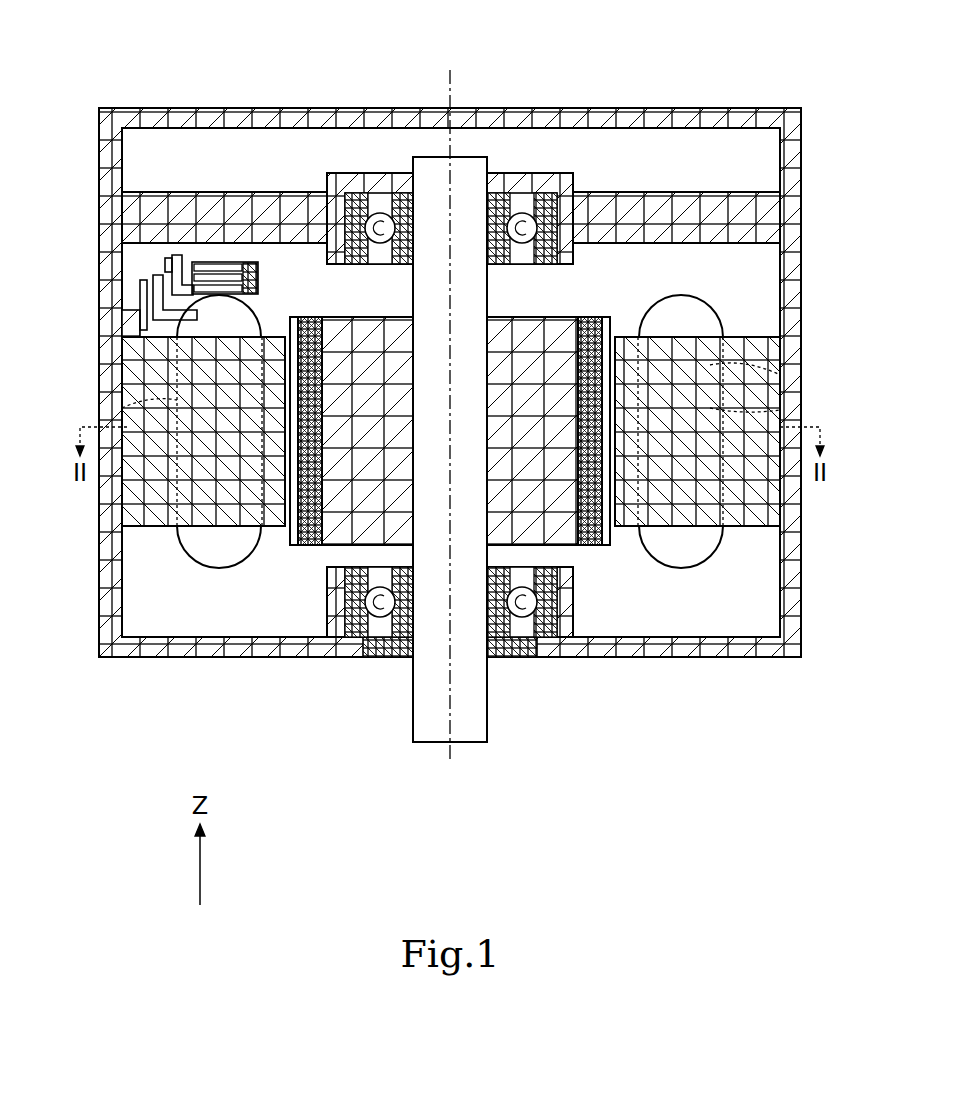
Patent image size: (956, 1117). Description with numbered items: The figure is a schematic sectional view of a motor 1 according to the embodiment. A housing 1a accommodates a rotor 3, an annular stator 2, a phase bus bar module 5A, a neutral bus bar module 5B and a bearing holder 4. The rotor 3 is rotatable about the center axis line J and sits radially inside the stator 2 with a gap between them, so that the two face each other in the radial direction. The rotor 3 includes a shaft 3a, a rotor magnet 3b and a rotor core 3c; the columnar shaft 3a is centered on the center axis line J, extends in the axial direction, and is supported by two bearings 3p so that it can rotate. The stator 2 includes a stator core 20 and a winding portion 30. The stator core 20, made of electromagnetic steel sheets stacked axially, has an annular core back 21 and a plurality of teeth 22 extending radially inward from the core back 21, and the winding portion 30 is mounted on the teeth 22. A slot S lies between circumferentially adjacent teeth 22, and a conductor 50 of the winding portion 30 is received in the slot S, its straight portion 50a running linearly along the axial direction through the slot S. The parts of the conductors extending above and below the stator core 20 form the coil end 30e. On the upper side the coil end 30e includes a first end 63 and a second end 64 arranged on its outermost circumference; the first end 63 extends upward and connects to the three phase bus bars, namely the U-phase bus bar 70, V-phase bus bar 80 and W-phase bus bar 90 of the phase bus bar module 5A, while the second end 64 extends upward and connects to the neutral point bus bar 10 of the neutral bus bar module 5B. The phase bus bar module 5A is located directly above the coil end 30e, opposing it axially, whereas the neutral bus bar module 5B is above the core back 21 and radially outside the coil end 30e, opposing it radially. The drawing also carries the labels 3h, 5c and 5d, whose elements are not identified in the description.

The motor 1 is at (459, 330).
The housing 1a is at (747, 117).
The stator 2 is at (752, 542).
The rotor 3 is at (451, 446).
The shaft 3a is at (478, 718).
The rotor magnet 3b is at (308, 533).
The rotor core 3c is at (563, 515).
The rotor core hole 3h is at (320, 540).
The bearings 3p is at (522, 213).
The bearing holder 4 is at (763, 210).
The phase bus bar module 5A is at (270, 173).
The neutral bus bar module 5B is at (122, 320).
The sensor holder 5c is at (243, 262).
The stator upper surface 5d is at (110, 330).
The neutral point bus bar 10 is at (140, 282).
The stator core 20 is at (452, 474).
The core back 21 is at (137, 482).
The teeth 22 is at (200, 497).
The winding portion 30 is at (442, 332).
The coil end 30e is at (218, 296).
The conductor 50 is at (448, 486).
The straight portion 50a is at (122, 408).
The first end 63 is at (170, 258).
The second end 64 is at (152, 278).
The U-phase bus bar 70 is at (262, 267).
The V-phase bus bar 80 is at (262, 277).
The W-phase bus bar 90 is at (262, 289).
The center axis line J is at (450, 77).
The slot S is at (773, 373).